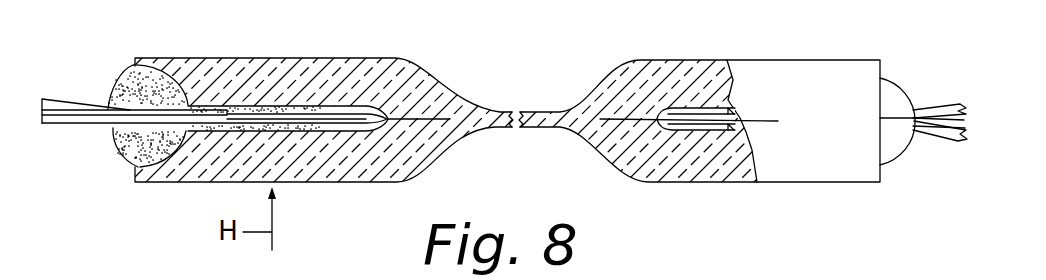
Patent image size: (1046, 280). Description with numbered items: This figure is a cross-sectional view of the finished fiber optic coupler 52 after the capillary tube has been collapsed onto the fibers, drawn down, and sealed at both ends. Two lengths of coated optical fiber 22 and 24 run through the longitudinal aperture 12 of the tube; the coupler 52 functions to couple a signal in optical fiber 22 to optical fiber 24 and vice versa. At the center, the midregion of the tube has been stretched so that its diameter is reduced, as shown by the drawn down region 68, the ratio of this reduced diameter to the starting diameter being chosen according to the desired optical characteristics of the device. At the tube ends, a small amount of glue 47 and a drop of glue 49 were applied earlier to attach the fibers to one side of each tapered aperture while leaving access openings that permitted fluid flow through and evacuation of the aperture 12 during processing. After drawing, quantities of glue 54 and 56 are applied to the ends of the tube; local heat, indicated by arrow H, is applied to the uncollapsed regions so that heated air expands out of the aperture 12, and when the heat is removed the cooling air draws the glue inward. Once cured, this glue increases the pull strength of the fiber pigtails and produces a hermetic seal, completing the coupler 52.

The longitudinal aperture 12 is at (355, 107).
The coated optical fiber 22 is at (69, 93).
The coated optical fiber 24 is at (71, 130).
The glue 47 is at (896, 146).
The drop of glue 49 is at (126, 160).
The fiber optic coupler 52 is at (337, 190).
The quantity of glue 54 is at (900, 45).
The quantity of glue 56 is at (133, 65).
The drawn down region 68 is at (530, 111).